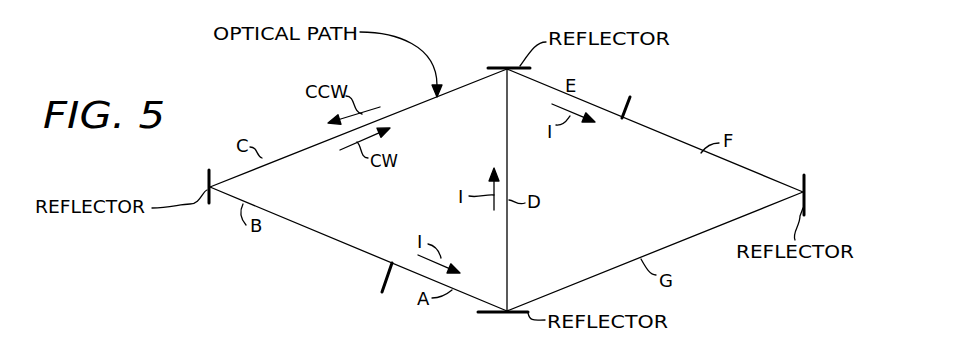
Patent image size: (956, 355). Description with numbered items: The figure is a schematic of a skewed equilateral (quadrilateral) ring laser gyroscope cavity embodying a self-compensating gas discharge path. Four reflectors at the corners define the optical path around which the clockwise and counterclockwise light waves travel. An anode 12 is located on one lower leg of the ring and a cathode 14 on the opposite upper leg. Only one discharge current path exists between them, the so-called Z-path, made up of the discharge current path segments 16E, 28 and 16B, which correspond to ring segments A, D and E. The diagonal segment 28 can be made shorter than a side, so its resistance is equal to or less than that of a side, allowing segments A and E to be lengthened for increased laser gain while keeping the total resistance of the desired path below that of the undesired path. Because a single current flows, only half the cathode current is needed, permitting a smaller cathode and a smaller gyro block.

The anode 12 is at (384, 280).
The cathode 14 is at (628, 107).
The discharge current path segment 16B is at (591, 104).
The discharge current path segment 16E is at (465, 296).
The discharge current path segment 28 is at (509, 228).